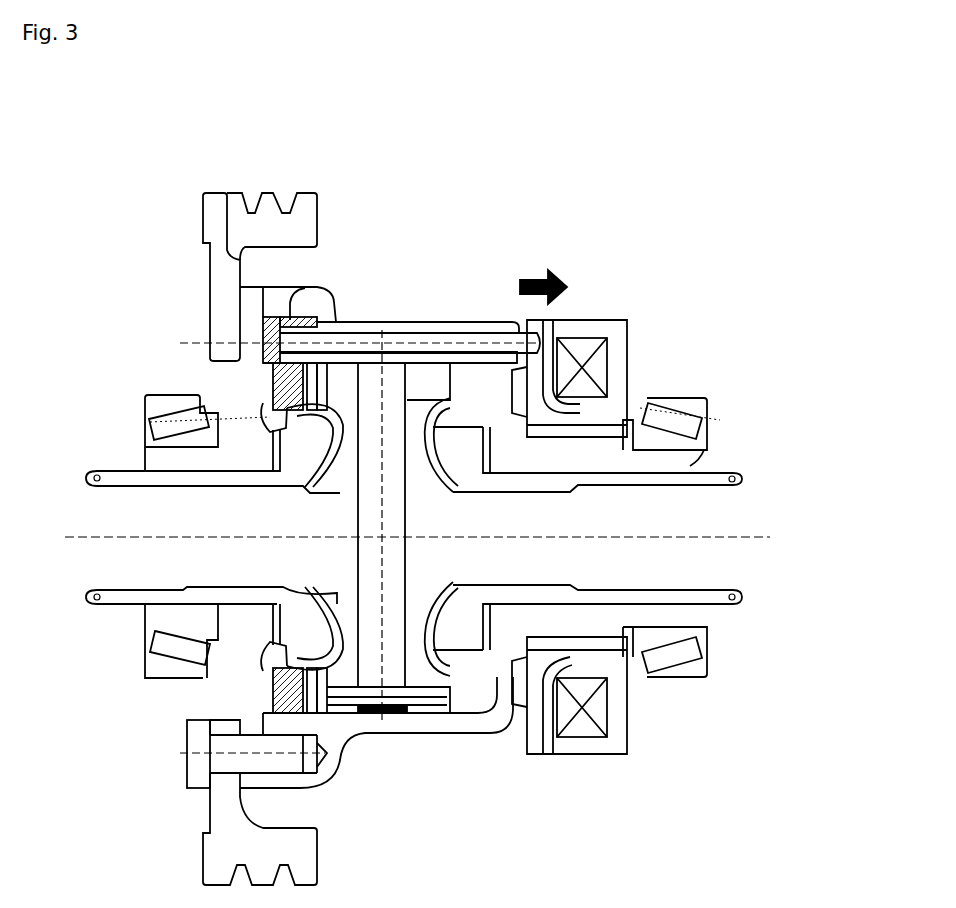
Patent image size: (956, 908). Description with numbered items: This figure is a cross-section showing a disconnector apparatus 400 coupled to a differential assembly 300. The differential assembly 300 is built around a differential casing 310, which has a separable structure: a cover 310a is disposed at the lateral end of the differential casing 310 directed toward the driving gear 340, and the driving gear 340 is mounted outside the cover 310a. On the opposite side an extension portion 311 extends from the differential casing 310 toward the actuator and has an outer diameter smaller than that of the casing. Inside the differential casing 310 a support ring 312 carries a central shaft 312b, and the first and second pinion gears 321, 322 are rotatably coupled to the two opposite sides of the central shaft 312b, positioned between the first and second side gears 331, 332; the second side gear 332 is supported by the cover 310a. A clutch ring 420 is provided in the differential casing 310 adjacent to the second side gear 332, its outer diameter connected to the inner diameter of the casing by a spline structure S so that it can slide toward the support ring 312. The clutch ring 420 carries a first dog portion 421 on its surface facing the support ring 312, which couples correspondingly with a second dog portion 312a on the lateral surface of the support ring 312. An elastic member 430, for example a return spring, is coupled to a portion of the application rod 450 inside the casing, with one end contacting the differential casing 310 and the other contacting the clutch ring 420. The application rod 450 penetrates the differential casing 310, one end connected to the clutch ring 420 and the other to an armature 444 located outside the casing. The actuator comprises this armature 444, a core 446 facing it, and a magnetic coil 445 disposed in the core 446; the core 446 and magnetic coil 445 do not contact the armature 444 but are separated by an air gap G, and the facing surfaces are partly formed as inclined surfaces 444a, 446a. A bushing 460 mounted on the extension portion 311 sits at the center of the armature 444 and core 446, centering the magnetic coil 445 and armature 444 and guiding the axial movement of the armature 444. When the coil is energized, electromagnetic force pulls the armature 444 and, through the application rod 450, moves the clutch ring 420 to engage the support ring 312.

The differential assembly 300 is at (150, 352).
The differential casing 310 is at (337, 320).
The cover 310a is at (245, 635).
The extension portion 311 is at (690, 462).
The support ring 312 is at (378, 335).
The second dog portion 312a is at (327, 403).
The central shaft 312b is at (393, 383).
The first pinion gear 321 is at (458, 333).
The second pinion gear 322 is at (420, 693).
The first side gear 331 is at (458, 660).
The second side gear 332 is at (303, 620).
The driving gear 340 is at (257, 193).
The disconnector apparatus 400 is at (632, 295).
The clutch ring 420 is at (273, 372).
The first dog portion 421 is at (252, 421).
The elastic member 430 is at (303, 317).
The armature 444 is at (520, 320).
The inclined surface 444a is at (558, 400).
The magnetic coil 445 is at (595, 363).
The core 446 is at (615, 333).
The inclined surface 446a is at (595, 437).
The application rod 450 is at (428, 333).
The bushing 460 is at (667, 417).
The spline structure S is at (310, 305).
The air gap G is at (557, 415).